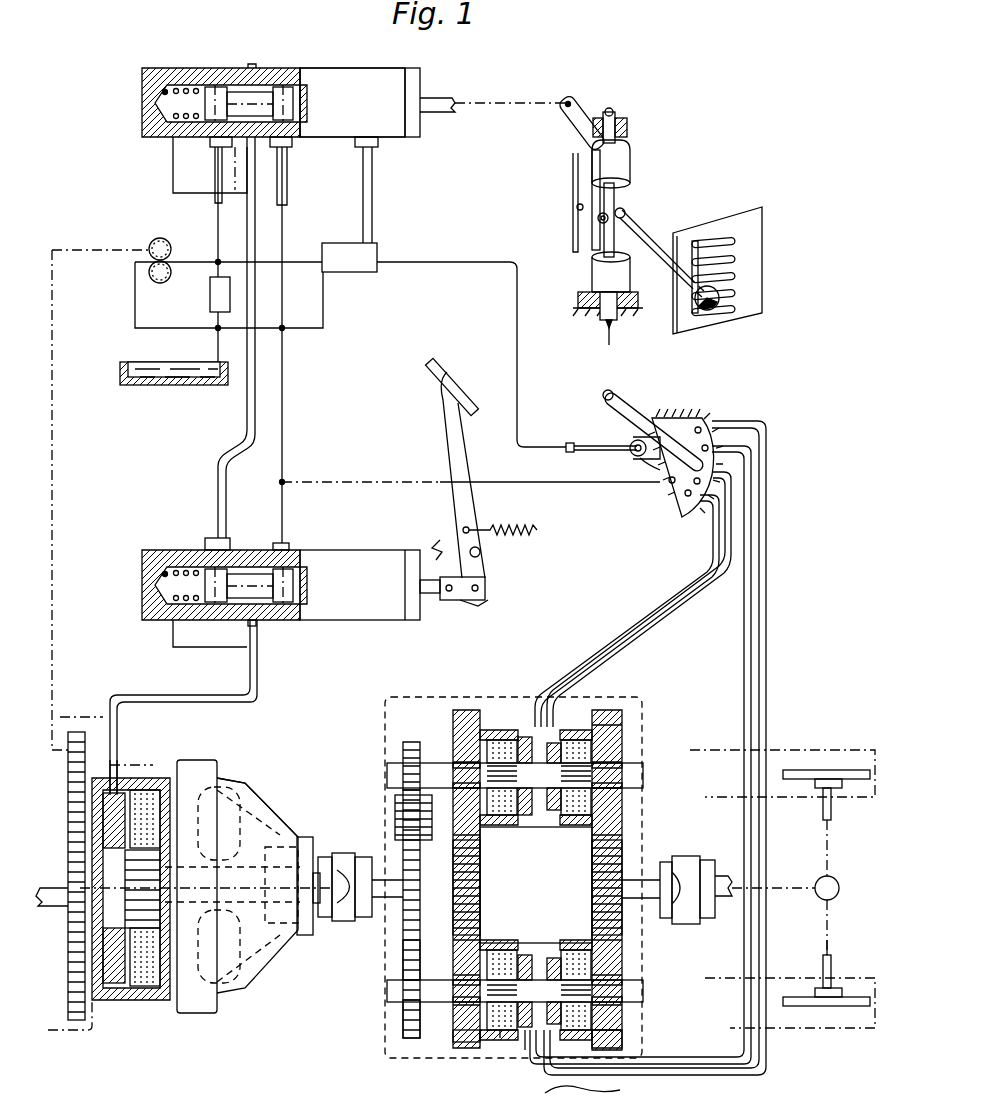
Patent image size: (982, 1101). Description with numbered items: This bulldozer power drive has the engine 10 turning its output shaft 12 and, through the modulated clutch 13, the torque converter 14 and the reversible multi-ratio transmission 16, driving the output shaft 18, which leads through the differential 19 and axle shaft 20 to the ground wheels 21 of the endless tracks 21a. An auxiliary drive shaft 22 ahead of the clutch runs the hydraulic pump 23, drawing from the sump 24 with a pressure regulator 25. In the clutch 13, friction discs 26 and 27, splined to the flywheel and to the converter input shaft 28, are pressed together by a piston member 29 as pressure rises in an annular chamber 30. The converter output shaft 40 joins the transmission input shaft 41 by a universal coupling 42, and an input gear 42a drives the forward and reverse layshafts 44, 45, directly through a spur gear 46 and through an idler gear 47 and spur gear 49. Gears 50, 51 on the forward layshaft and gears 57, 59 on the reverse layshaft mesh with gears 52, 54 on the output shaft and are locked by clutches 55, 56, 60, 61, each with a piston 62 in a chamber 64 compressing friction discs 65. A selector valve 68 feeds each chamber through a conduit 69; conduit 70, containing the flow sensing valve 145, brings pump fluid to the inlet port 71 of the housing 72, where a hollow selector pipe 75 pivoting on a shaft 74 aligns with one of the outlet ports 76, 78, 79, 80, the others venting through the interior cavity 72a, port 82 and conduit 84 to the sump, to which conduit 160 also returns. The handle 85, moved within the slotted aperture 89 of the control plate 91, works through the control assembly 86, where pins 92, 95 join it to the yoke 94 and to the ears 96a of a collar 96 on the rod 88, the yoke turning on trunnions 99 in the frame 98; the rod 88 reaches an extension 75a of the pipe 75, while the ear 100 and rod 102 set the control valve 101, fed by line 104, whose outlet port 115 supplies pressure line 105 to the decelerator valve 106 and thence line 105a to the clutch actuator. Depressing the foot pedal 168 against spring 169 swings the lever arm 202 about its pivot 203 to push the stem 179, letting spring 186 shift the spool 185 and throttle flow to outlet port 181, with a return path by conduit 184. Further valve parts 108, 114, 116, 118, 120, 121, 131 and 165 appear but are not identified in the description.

The engine 10 is at (94, 714).
The output shaft 12 is at (58, 870).
The modulated clutch 13 is at (158, 764).
The torque converter 14 is at (240, 800).
The transmission 16 is at (380, 1058).
The output shaft 18 is at (652, 878).
The differential 19 is at (839, 882).
The axle shaft 20 is at (830, 958).
The ground wheels 21 is at (855, 768).
The endless tracks 21a is at (790, 750).
The auxiliary drive shaft 22 is at (80, 719).
The hydraulic pump 23 is at (148, 244).
The sump 24 is at (118, 368).
The pressure regulator 25 is at (210, 294).
The friction discs 26 is at (135, 988).
The friction discs 27 is at (145, 988).
The torque converter input shaft 28 is at (182, 881).
The piston member 29 is at (116, 793).
The annular chamber 30 is at (85, 987).
The converter output shaft 40 is at (316, 872).
The transmission input shaft 41 is at (405, 927).
The universal coupling 42 is at (344, 868).
The input gear 42a is at (403, 960).
The forward layshaft 44 is at (387, 988).
The reverse layshaft 45 is at (387, 770).
The spur gear 46 is at (403, 1028).
The idler gear 47 is at (395, 814).
The spur gear 49 is at (400, 752).
The gear 50 is at (452, 1060).
The gear 51 is at (622, 1027).
The gear 52 is at (470, 872).
The gear 54 is at (600, 862).
The multi-disc clutch 55 is at (498, 950).
The multi-disc clutch 56 is at (574, 950).
The gear 57 is at (453, 718).
The gear 59 is at (616, 710).
The clutch 60 is at (502, 728).
The clutch 61 is at (582, 728).
The piston 62 is at (525, 1050).
The chamber 64 is at (536, 951).
The friction discs 65 is at (500, 1040).
The selector valve 68 is at (762, 401).
The hydraulic conduit 69 is at (745, 582).
The fluid conduit 70 is at (298, 262).
The inlet port 71 is at (630, 447).
The housing 72 is at (672, 418).
The interior cavity 72a is at (700, 412).
The shaft 74 is at (645, 465).
The selector pipe 75 is at (620, 420).
The extension 75a is at (620, 400).
The outlet port 76 is at (702, 427).
The outlet port 78 is at (708, 449).
The outlet port 79 is at (684, 495).
The outlet port 80 is at (694, 486).
The port 82 is at (668, 484).
The conduit 84 is at (578, 482).
The handle 85 is at (662, 258).
The control assembly 86 is at (698, 148).
The rod 88 is at (612, 328).
The aperture 89 is at (708, 312).
The control plate 91 is at (738, 320).
The pin 92 is at (577, 208).
The yoke 94 is at (573, 182).
The pin 95 is at (604, 224).
The collar 96 is at (600, 236).
The ears 96a is at (626, 212).
The frame 98 is at (628, 128).
The trunnions 99 is at (612, 112).
The ear 100 is at (602, 118).
The control valve 101 is at (188, 66).
The rod 102 is at (498, 104).
The hydraulic line 104 is at (217, 226).
The pressure line 105 is at (218, 473).
The hydraulic line 105a is at (258, 666).
The decelerator valve 106 is at (165, 548).
The valve cylinder 108 is at (280, 70).
The port 114 is at (218, 148).
The outlet port 115 is at (242, 147).
The port 116 is at (292, 154).
The valve spool 118 is at (238, 92).
The spool land 120 is at (163, 92).
The return line 121 is at (173, 178).
The port 131 is at (376, 147).
The flow sensing valve 145 is at (360, 270).
The conduit 160 is at (330, 318).
The line 165 is at (372, 175).
The foot pedal 168 is at (452, 378).
The spring 169 is at (523, 521).
The actuating stem 179 is at (432, 594).
The outlet port 181 is at (275, 622).
The conduit 184 is at (284, 507).
The spool 185 is at (241, 574).
The spring 186 is at (162, 578).
The lever arm 202 is at (446, 444).
The pivot 203 is at (481, 553).